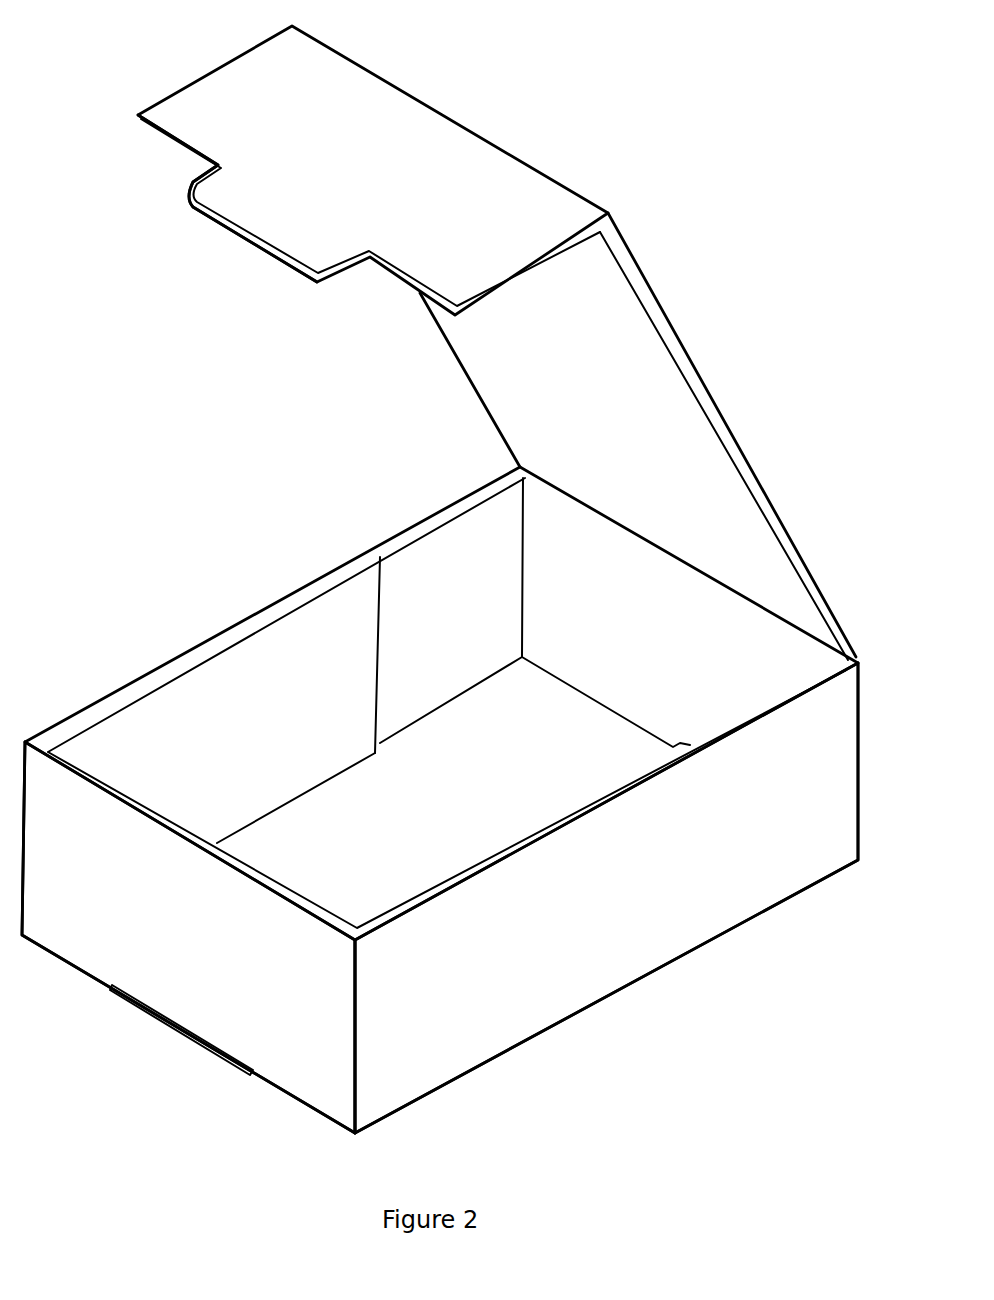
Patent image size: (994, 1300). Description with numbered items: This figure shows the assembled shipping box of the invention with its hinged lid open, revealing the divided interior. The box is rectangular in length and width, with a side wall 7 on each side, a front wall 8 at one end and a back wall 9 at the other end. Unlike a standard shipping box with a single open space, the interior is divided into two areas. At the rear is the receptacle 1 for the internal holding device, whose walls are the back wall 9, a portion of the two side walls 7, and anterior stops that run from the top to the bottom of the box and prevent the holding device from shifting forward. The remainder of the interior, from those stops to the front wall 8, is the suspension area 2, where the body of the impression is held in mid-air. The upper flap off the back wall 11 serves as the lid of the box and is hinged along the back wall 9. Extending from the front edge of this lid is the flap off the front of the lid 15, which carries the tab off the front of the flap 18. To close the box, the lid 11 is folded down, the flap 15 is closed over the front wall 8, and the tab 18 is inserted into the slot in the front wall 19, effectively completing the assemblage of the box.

The receptacle for the internal holding device 1 is at (447, 808).
The suspension area for the body of the impression 2 is at (367, 852).
The side wall of the box 7 is at (617, 897).
The front wall of the box 8 is at (150, 905).
The back wall of the box 9 is at (673, 640).
The upper flap off the back wall 11 is at (610, 384).
The flap off the front of the lid 15 is at (285, 112).
The tab off the front of the flap off the front of the lid 18 is at (270, 215).
The slot in the front wall 19 is at (203, 1048).